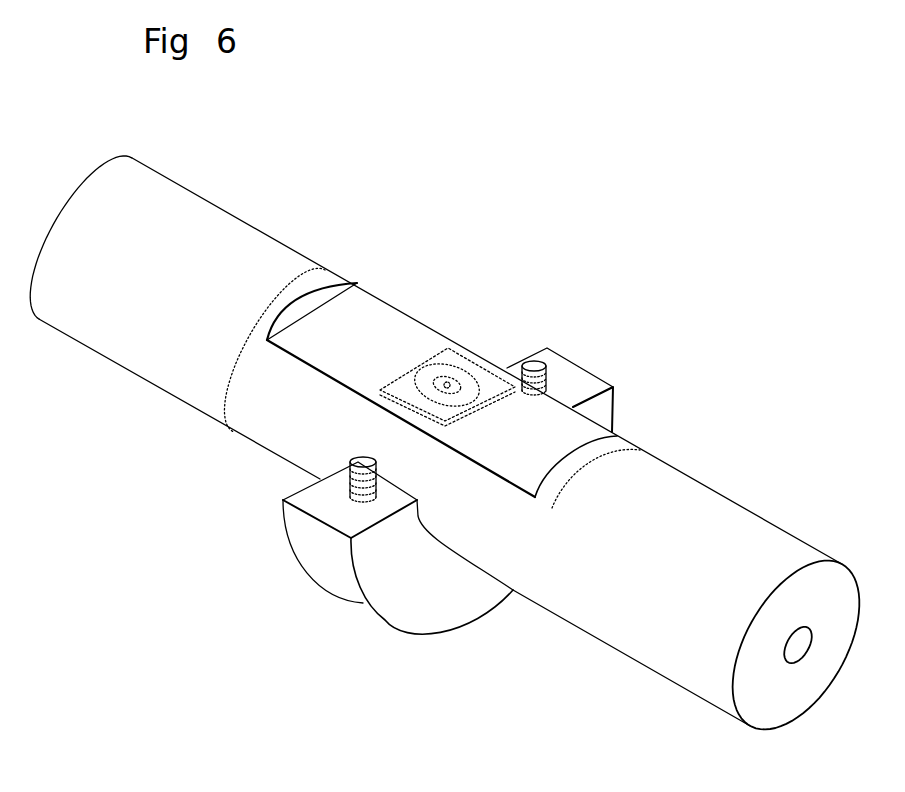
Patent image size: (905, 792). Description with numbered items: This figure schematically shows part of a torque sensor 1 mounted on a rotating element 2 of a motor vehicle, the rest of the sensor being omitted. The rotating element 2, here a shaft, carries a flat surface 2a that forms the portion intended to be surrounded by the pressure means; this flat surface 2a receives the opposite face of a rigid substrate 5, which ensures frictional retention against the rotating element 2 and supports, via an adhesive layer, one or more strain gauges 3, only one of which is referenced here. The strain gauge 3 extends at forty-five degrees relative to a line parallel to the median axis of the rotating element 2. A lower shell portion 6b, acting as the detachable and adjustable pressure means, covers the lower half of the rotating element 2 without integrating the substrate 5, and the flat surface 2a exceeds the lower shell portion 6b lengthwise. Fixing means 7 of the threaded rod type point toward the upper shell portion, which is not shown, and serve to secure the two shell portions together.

The torque sensor 1 is at (598, 348).
The rotating element 2 is at (707, 532).
The flat surface 2a is at (543, 433).
The strain gauge 3 is at (447, 388).
The substrate 5 is at (450, 358).
The lower shell portion 6b is at (363, 603).
The fixing means 7 is at (553, 362).